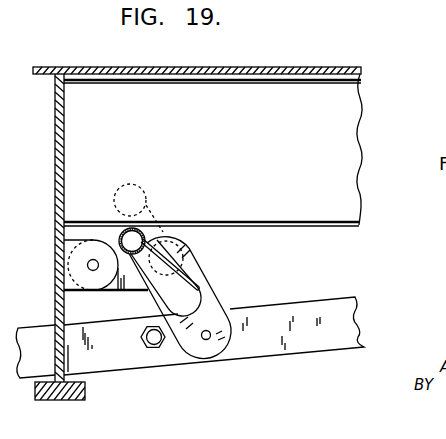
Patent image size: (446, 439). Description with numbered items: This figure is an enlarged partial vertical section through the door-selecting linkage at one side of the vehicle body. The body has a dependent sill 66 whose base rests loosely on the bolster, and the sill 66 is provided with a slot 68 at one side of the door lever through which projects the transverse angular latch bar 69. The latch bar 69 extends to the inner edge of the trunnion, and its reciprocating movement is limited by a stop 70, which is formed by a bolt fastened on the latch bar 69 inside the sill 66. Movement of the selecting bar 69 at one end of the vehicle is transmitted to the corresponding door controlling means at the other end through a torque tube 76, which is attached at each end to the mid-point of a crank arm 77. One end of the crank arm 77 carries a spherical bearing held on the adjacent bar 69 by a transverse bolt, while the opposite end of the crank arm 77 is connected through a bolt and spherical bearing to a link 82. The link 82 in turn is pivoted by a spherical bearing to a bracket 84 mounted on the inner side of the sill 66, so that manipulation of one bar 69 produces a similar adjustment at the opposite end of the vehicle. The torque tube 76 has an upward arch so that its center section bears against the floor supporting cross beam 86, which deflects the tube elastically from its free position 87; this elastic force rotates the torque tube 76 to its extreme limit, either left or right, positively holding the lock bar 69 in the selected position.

The sill 66 is at (56, 189).
The slot 68 is at (56, 336).
The latch bar 69 is at (275, 308).
The stop 70 is at (150, 346).
The torque tube 76 is at (157, 217).
The crank arm 77 is at (210, 303).
The link 82 is at (130, 278).
The bracket 84 is at (66, 244).
The floor supporting cross beam 86 is at (335, 123).
The free position 87 is at (134, 184).